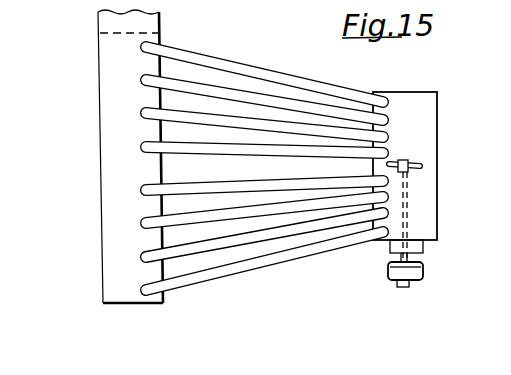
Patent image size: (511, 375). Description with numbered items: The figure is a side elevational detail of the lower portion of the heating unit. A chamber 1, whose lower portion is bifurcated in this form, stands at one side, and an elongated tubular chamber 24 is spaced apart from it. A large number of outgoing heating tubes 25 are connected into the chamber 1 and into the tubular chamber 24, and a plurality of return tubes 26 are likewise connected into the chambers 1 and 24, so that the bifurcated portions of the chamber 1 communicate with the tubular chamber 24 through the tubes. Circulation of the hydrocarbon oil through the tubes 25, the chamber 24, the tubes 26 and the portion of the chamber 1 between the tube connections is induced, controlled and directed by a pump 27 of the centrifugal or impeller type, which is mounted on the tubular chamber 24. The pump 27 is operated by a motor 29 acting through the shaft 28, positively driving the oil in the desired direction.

The chamber 1 is at (101, 198).
The elongated tubular chamber 24 is at (438, 113).
The outgoing heating tubes 25 is at (297, 76).
The return tubes 26 is at (283, 263).
The pump 27 is at (422, 165).
The shaft 28 is at (409, 258).
The motor 29 is at (415, 279).